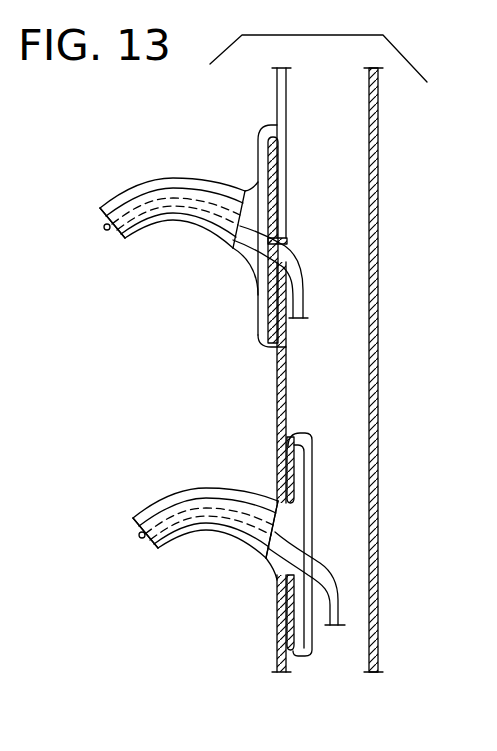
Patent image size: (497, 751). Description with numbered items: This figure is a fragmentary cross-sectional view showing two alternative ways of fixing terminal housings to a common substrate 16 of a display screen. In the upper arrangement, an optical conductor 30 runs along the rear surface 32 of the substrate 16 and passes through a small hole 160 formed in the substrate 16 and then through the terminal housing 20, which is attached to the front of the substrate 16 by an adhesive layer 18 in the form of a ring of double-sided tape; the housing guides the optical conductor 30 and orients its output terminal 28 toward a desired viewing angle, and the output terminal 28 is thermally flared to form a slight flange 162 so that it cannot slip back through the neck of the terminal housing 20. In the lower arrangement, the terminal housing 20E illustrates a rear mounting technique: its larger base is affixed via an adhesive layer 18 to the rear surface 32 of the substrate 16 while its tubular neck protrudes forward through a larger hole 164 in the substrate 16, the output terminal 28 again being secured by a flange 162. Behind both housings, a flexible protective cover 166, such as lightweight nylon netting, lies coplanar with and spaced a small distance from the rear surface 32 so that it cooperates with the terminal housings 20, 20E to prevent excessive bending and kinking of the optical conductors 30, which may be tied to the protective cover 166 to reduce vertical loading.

The substrate 16 is at (277, 386).
The adhesive layer 18 is at (282, 463).
The terminal housing 20 is at (135, 183).
The terminal housing 20E is at (147, 503).
The output terminal 28 is at (103, 229).
The optical conductor 30 is at (303, 293).
The rear surface 32 is at (287, 365).
The small hole 160 is at (290, 252).
The flange 162 is at (108, 231).
The larger hole 164 is at (265, 561).
The protective cover 166 is at (377, 190).